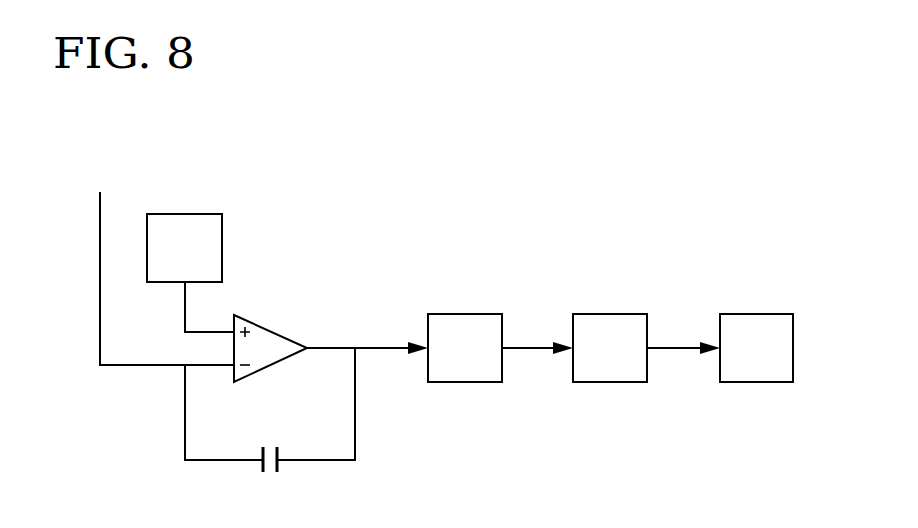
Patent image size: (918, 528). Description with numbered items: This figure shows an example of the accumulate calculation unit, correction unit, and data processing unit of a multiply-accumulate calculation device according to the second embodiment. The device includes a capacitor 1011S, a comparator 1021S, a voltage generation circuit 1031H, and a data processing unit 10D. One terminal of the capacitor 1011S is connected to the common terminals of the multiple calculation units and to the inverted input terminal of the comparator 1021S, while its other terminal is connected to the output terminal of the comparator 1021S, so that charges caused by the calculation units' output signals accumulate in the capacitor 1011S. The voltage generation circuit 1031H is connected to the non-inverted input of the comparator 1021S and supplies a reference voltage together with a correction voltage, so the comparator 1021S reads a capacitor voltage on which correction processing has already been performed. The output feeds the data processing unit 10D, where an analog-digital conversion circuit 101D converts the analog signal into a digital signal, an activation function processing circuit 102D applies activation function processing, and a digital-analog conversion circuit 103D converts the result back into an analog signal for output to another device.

The voltage generation circuit 1031H is at (177, 213).
The comparator 1021S is at (277, 328).
The capacitor 1011S is at (280, 455).
The data processing unit 10D is at (728, 131).
The analog-digital conversion circuit 101D is at (502, 323).
The activation function processing circuit 102D is at (612, 314).
The digital-analog conversion circuit 103D is at (718, 330).